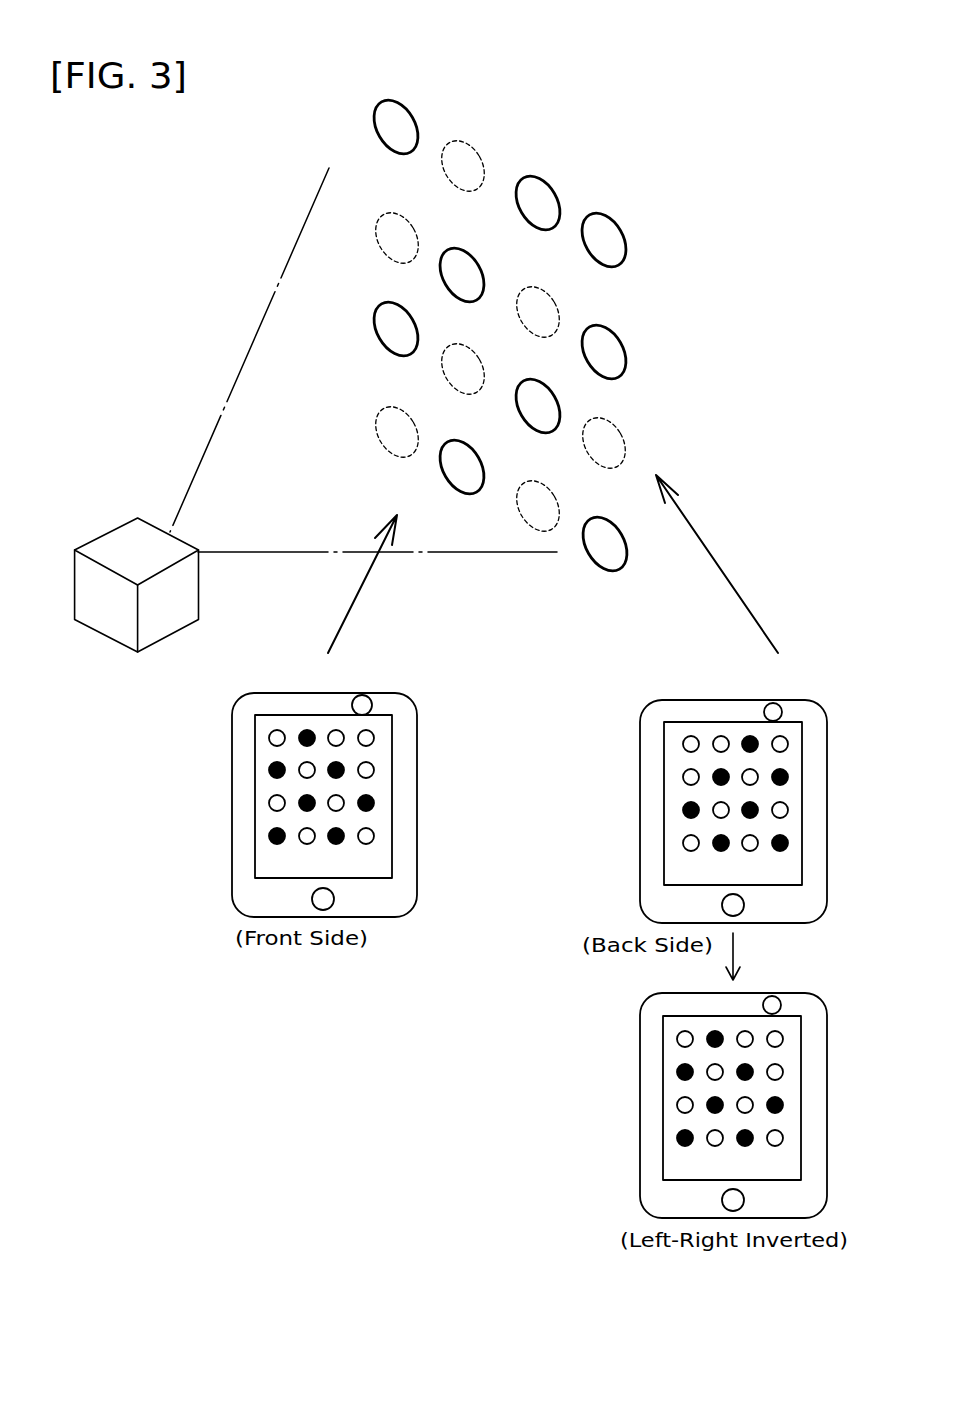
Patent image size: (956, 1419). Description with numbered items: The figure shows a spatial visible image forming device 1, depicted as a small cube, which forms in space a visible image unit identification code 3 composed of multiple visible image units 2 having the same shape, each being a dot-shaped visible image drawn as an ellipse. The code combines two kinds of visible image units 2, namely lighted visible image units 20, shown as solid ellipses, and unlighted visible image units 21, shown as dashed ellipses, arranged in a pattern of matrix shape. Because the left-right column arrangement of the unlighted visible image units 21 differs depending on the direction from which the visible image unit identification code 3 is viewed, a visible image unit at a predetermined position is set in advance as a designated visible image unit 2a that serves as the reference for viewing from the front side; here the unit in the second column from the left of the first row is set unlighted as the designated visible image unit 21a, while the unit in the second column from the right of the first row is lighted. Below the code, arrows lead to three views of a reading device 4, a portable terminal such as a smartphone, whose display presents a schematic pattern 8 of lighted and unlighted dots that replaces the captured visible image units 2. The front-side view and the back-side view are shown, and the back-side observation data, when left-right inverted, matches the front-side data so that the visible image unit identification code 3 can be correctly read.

The spatial visible image forming device 1 is at (121, 520).
The visible image unit 2 is at (460, 335).
The lighted visible image unit 20 is at (377, 126).
The unlighted visible image unit 21 is at (526, 284).
The designated visible image unit 2a is at (308, 728).
The designated unlighted visible image unit 21a is at (477, 153).
The visible image unit identification code 3 is at (705, 313).
The reading device 4 is at (417, 730).
The schematic pattern 8 is at (367, 752).